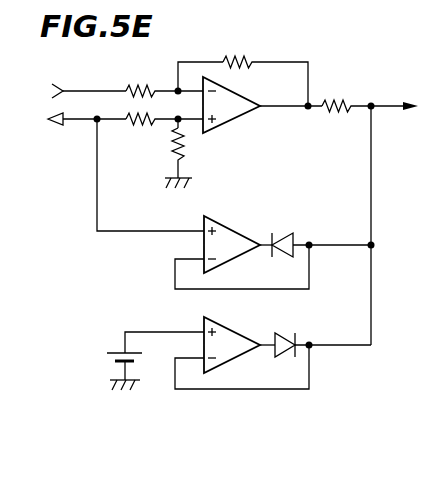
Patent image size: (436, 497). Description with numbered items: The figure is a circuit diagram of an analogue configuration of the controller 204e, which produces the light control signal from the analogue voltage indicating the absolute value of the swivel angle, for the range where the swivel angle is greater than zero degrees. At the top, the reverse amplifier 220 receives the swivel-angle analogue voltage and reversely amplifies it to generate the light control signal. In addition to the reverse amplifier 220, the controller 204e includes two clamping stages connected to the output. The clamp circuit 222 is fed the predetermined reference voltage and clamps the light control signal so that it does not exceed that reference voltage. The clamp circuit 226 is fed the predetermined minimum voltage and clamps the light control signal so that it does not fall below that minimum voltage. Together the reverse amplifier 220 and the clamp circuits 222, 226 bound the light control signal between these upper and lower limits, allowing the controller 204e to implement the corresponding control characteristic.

The controller 204e is at (257, 449).
The reverse amplifier 220 is at (254, 136).
The clamp circuit 222 is at (266, 206).
The clamp circuit 226 is at (264, 315).